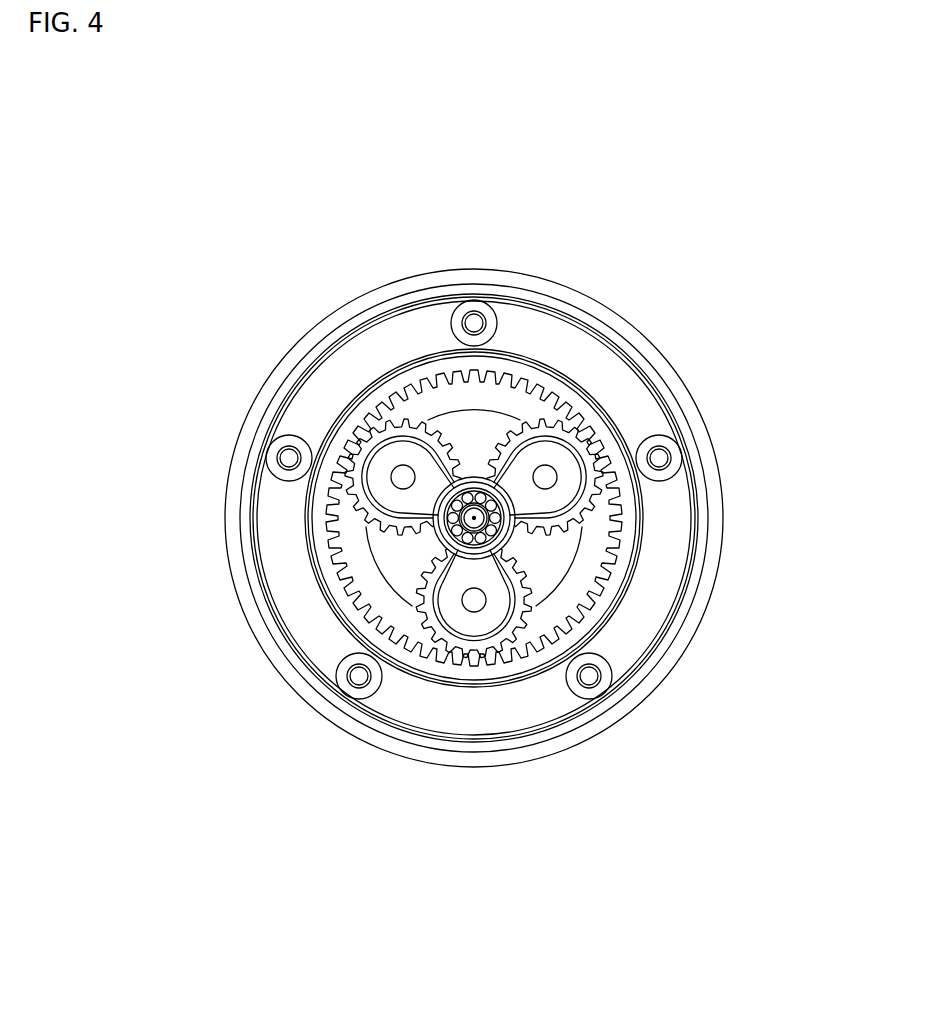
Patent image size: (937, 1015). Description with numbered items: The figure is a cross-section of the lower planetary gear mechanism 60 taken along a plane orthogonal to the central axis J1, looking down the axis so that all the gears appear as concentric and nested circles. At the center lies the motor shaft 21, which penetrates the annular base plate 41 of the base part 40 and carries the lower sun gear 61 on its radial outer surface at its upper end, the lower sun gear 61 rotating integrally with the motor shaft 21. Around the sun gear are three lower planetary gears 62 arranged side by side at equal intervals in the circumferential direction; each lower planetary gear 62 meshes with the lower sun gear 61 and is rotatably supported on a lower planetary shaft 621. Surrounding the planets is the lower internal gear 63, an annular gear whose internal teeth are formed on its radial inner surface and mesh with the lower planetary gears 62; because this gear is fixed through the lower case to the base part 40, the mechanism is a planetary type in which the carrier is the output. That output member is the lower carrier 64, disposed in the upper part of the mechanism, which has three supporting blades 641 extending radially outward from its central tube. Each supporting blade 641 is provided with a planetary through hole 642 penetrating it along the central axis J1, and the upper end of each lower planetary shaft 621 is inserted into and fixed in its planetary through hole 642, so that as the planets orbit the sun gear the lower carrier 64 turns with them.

The base part 40 is at (590, 285).
The base plate 41 is at (514, 288).
The lower planetary gear mechanism 60 is at (273, 507).
The lower sun gear 61 is at (445, 531).
The lower planetary gear 62 is at (390, 467).
The lower planetary shaft 621 is at (343, 467).
The lower internal gear 63 is at (505, 670).
The lower carrier 64 is at (581, 489).
The supporting blade 641 is at (395, 466).
The planetary through hole 642 is at (402, 474).
The motor shaft 21 is at (470, 518).
The central axis J1 is at (480, 521).